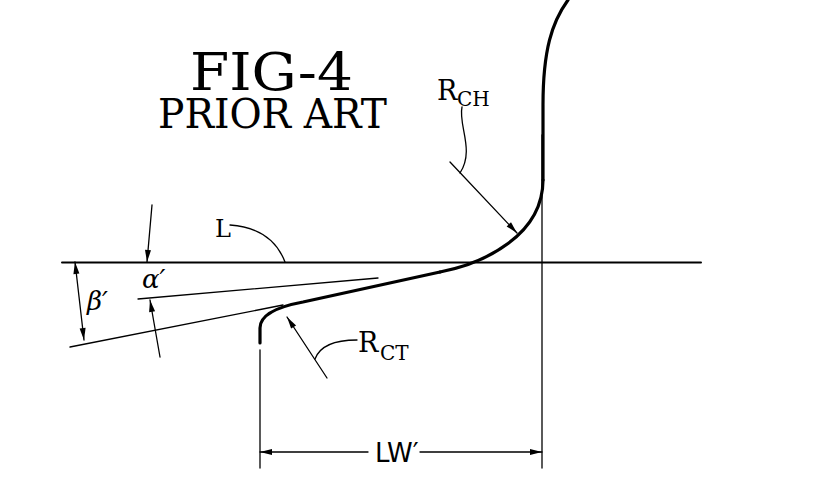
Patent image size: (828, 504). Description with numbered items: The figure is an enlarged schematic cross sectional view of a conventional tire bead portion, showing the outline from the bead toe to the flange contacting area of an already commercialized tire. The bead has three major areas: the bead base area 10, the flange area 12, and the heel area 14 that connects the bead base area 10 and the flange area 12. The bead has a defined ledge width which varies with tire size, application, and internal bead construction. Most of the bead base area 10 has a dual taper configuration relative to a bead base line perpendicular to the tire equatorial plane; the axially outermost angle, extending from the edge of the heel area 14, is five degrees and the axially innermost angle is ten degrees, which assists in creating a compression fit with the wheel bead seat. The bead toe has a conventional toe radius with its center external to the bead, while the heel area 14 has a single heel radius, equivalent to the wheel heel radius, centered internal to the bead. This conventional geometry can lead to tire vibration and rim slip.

The bead base area 10 is at (383, 297).
The flange area 12 is at (570, 17).
The heel area 14 is at (485, 242).